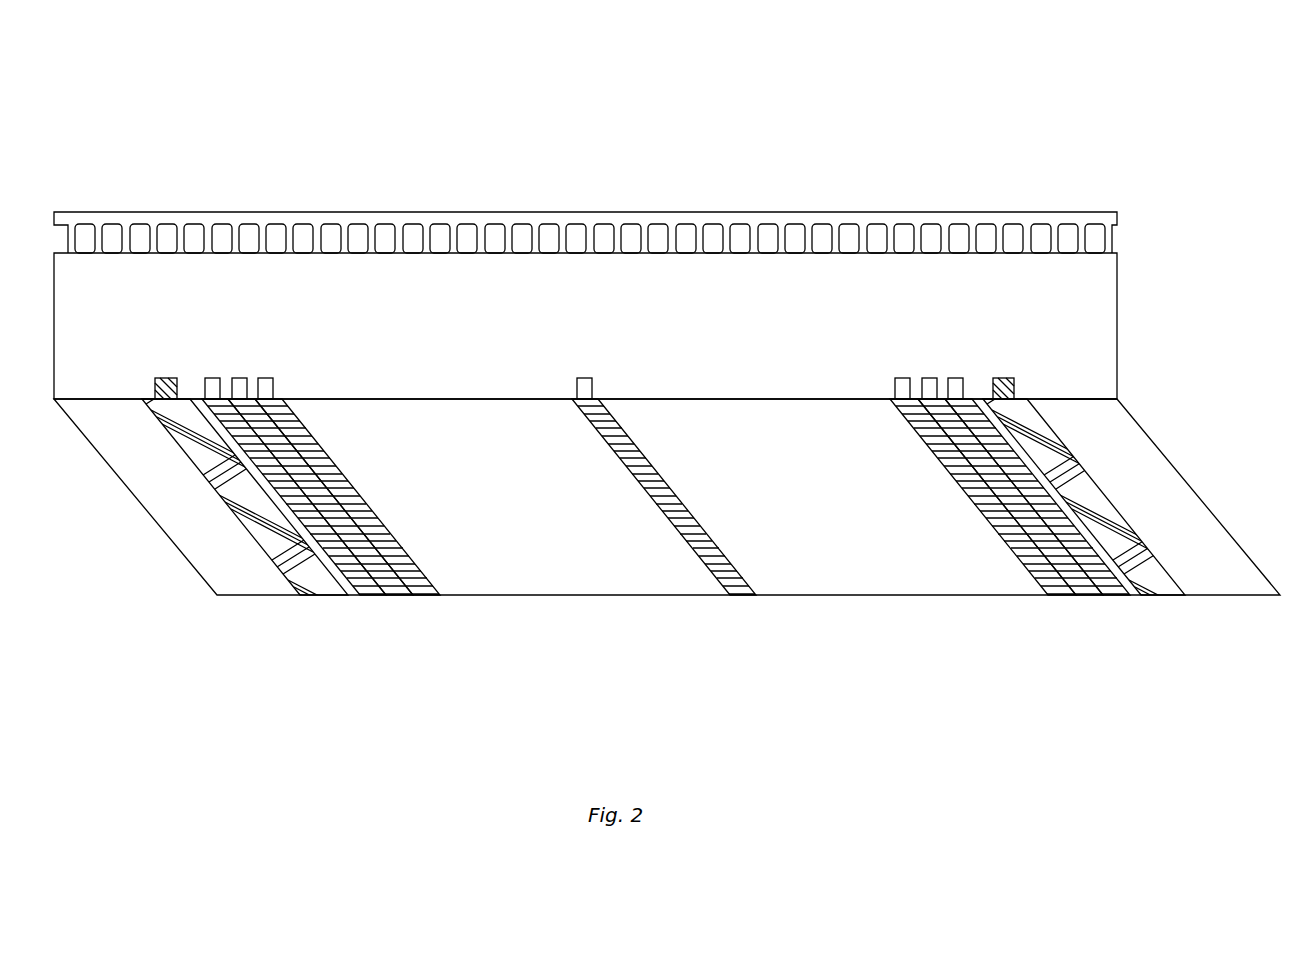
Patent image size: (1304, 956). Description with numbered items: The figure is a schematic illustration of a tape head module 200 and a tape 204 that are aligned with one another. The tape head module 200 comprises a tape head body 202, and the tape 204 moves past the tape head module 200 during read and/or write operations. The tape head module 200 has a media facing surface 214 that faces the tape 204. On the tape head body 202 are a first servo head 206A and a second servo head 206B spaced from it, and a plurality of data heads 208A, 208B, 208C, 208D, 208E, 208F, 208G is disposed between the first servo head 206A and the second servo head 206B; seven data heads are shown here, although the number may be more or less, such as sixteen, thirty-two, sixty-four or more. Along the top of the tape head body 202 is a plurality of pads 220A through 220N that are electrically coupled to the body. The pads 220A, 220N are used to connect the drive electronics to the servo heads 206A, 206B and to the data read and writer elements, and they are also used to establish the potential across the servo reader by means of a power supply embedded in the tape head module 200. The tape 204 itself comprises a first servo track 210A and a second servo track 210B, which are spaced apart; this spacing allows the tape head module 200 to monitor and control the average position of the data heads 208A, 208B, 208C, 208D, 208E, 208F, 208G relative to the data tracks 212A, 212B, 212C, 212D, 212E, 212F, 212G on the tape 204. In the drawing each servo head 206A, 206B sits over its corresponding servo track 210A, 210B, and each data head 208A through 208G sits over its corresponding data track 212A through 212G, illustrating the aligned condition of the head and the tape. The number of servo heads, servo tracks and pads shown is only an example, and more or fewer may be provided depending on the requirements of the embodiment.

The tape head module 200 is at (118, 67).
The tape head body 202 is at (1117, 290).
The tape 204 is at (1200, 500).
The first servo head 206A is at (167, 377).
The second servo head 206B is at (1001, 377).
The data head 208A is at (213, 377).
The data head 208B is at (238, 377).
The data head 208C is at (263, 377).
The data head 208D is at (582, 377).
The data head 208E is at (903, 377).
The data head 208F is at (929, 377).
The data head 208G is at (955, 377).
The first servo track 210A is at (332, 597).
The second servo track 210B is at (1165, 597).
The data track 212A is at (377, 597).
The data track 212B is at (403, 597).
The data track 212C is at (430, 597).
The data track 212D is at (748, 597).
The data track 212E is at (1067, 598).
The data track 212F is at (1093, 598).
The data track 212G is at (1120, 598).
The media facing surface 214 is at (1072, 398).
The pad 220A is at (141, 224).
The pad 220N is at (1043, 224).